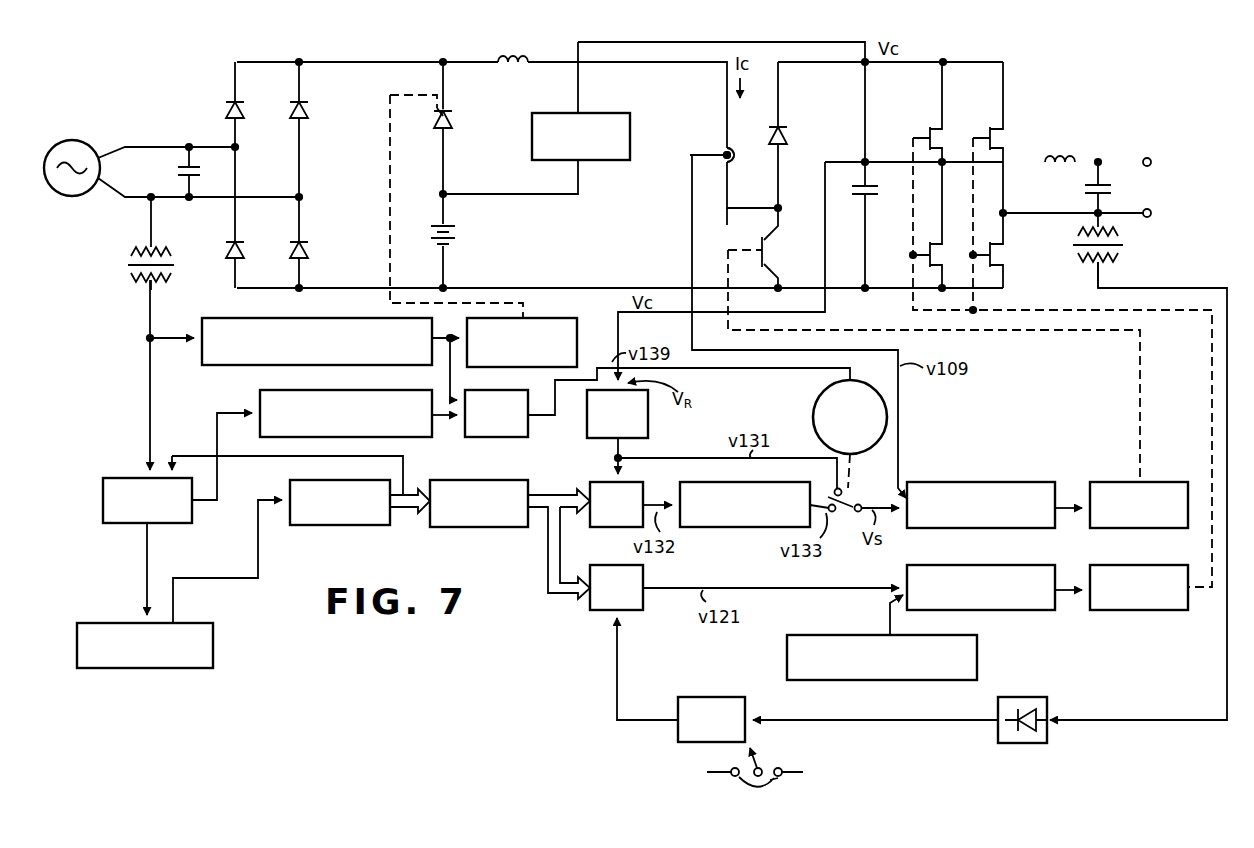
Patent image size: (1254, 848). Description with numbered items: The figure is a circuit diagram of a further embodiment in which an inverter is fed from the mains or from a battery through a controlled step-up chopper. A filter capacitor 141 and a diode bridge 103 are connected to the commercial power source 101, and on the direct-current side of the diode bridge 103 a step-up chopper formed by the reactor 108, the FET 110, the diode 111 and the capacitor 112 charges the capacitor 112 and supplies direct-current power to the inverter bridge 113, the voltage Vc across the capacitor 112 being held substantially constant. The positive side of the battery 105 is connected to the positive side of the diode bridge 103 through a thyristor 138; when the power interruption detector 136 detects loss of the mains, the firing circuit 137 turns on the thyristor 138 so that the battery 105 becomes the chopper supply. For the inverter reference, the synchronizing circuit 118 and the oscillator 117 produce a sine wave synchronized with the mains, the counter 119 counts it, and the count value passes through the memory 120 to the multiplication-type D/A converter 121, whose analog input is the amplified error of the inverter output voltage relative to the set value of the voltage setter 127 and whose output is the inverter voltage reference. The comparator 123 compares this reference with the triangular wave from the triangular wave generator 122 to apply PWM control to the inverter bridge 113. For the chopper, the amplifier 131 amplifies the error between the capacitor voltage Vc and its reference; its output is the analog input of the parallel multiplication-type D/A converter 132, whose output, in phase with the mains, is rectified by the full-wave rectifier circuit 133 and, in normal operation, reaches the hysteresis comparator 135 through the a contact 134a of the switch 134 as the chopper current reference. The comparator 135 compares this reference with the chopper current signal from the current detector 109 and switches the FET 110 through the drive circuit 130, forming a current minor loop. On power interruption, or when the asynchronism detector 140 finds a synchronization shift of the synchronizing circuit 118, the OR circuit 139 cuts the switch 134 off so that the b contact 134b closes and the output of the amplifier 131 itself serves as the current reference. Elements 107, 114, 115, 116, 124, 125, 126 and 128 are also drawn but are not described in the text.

The commercial power source 101 is at (73, 140).
The diode bridge 103 is at (270, 62).
The battery 105 is at (458, 233).
The charger 107 is at (613, 113).
The reactor 108 is at (503, 58).
The current detector 109 is at (724, 150).
The FET 110 is at (758, 240).
The diode 111 is at (783, 125).
The capacitor 112 is at (876, 190).
The inverter bridge 113 is at (1005, 62).
The filter inductor 114 is at (1060, 158).
The filter capacitor 115 is at (1083, 190).
The voltage detecting resistor 116 is at (131, 252).
The oscillator 117 is at (96, 623).
The synchronizing circuit 118 is at (113, 478).
The counter 119 is at (286, 491).
The memory 120 is at (490, 480).
The D/A converter 121 is at (612, 565).
The triangular wave generator 122 is at (826, 635).
The comparator 123 is at (983, 565).
The driver 124 is at (1141, 565).
The load resistor 125 is at (1123, 245).
The rectifier diode 126 is at (1029, 697).
The voltage setter 127 is at (790, 772).
The amplifier 128 is at (712, 697).
The drive circuit 130 is at (1104, 482).
The amplifier 131 is at (650, 424).
The D/A converter 132 is at (592, 482).
The full-wave rectifier circuit 133 is at (710, 527).
The switch 134 is at (815, 406).
The a contact 134a is at (836, 515).
The b contact 134b is at (864, 482).
The comparator 135 is at (975, 482).
The power interruption detector 136 is at (232, 318).
The firing circuit 137 is at (553, 318).
The thyristor 138 is at (450, 108).
The OR circuit 139 is at (530, 428).
The asynchronism detector 140 is at (258, 398).
The capacitor for filter 141 is at (178, 171).